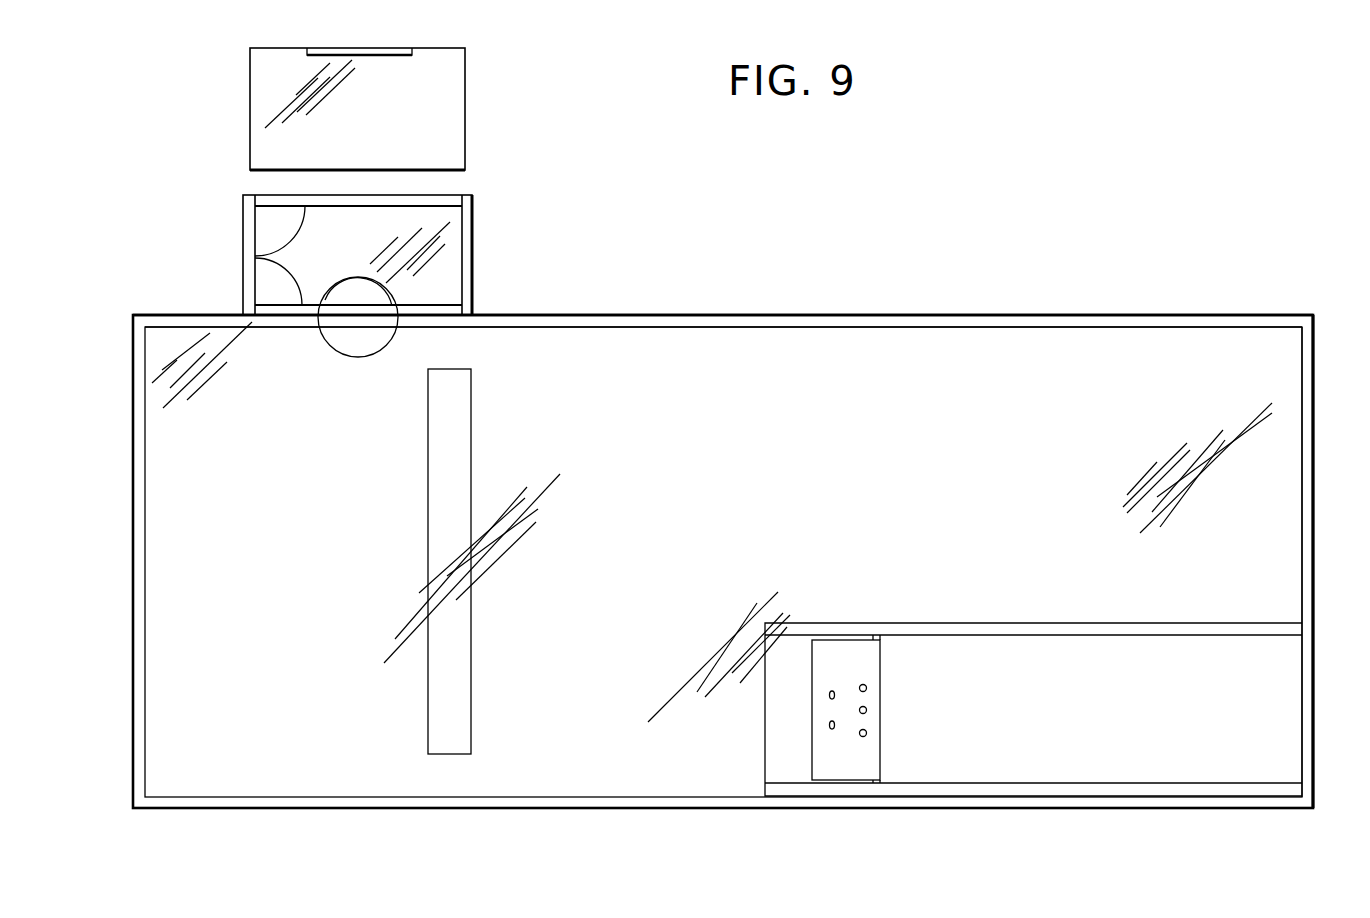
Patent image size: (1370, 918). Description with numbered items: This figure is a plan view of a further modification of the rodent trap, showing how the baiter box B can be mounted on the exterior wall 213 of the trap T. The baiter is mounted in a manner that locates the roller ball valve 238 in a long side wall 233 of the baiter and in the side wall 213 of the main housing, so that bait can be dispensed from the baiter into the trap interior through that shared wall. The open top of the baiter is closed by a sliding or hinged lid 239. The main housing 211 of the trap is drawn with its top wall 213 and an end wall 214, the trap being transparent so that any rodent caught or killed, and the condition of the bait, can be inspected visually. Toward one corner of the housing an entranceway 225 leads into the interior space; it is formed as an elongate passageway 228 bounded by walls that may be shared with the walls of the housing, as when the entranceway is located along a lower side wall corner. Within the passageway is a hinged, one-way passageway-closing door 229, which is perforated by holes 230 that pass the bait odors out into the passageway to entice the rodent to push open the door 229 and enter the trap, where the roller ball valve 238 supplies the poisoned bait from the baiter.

The lid 239 is at (440, 100).
The side wall 233 is at (250, 282).
The roller ball valve 238 is at (330, 343).
The housing 211 is at (558, 352).
The exterior wall 213 is at (873, 315).
The side wall 214 is at (1313, 330).
The duct 228 is at (1052, 622).
The plate 229 is at (863, 662).
The holes 230 is at (867, 710).
The compartment 225 is at (1085, 753).